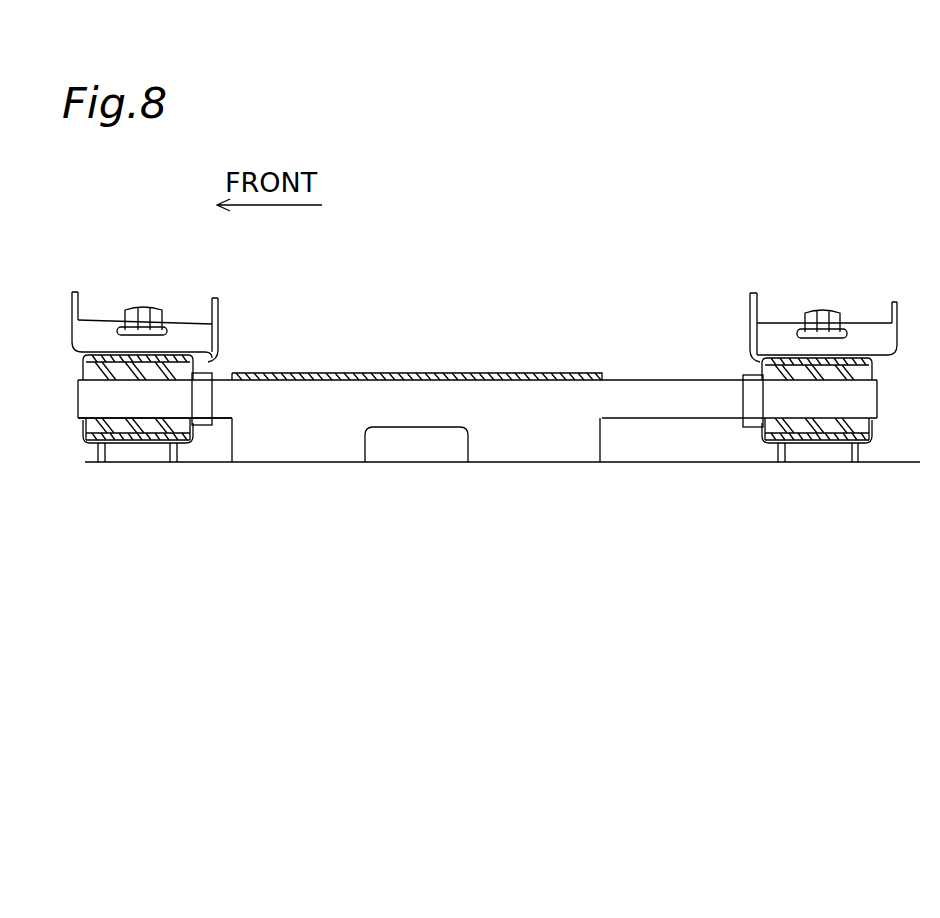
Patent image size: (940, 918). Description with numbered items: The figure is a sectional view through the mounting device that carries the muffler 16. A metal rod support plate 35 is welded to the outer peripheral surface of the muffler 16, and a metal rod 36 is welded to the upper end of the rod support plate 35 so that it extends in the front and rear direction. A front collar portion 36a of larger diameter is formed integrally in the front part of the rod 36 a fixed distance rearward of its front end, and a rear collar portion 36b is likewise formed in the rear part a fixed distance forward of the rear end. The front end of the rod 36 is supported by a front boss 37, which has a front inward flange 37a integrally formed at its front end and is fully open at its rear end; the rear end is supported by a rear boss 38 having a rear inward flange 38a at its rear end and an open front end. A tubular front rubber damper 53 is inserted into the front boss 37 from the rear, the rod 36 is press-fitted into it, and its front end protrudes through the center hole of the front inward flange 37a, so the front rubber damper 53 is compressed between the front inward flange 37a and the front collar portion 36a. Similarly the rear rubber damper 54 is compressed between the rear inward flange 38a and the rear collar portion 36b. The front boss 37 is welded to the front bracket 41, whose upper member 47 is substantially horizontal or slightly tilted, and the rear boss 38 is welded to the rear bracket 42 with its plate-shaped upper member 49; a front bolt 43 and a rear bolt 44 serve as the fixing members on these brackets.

The muffler 16 is at (590, 520).
The rod support plate 35 is at (330, 462).
The rod 36 is at (494, 373).
The front collar portion 36a is at (205, 425).
The rear collar portion 36b is at (752, 428).
The front boss 37 is at (137, 462).
The front inward flange 37a is at (67, 462).
The rear boss 38 is at (800, 445).
The rear inward flange 38a is at (875, 440).
The front bracket 41 is at (162, 303).
The rear bracket 42 is at (768, 306).
The front bolt 43 is at (145, 305).
The rear bolt 44 is at (818, 312).
The upper member 47 is at (85, 330).
The upper member 49 is at (775, 330).
The front rubber damper 53 is at (155, 462).
The rear rubber damper 54 is at (830, 430).